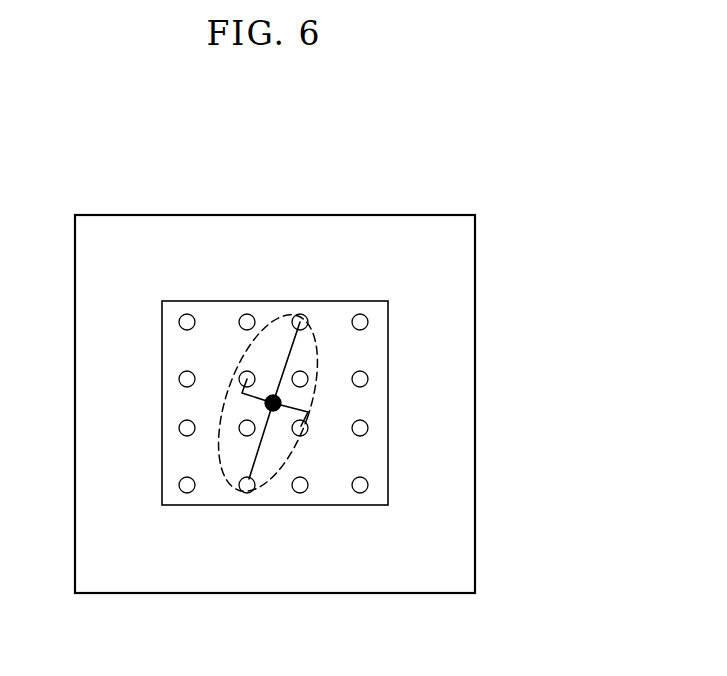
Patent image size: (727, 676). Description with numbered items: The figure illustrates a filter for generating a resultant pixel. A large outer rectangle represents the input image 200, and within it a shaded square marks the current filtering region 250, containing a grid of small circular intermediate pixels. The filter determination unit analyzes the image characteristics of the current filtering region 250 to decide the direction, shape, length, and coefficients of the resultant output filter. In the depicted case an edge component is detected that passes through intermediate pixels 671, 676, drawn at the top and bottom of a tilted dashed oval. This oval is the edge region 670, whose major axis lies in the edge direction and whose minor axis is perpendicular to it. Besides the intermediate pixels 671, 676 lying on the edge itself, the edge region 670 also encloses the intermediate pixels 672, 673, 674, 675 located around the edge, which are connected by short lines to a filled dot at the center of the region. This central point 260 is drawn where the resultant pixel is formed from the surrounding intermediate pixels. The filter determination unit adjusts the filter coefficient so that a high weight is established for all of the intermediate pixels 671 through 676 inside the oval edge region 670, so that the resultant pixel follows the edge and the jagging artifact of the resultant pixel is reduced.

The input image 200 is at (360, 215).
The current filtering region 250 is at (217, 315).
The touch point 260 is at (273, 411).
The edge region 670 is at (312, 402).
The intermediate pixel 671 is at (300, 314).
The intermediate pixel 672 is at (240, 375).
The intermediate pixel 673 is at (305, 376).
The intermediate pixel 674 is at (240, 431).
The intermediate pixel 675 is at (307, 431).
The intermediate pixel 676 is at (245, 492).